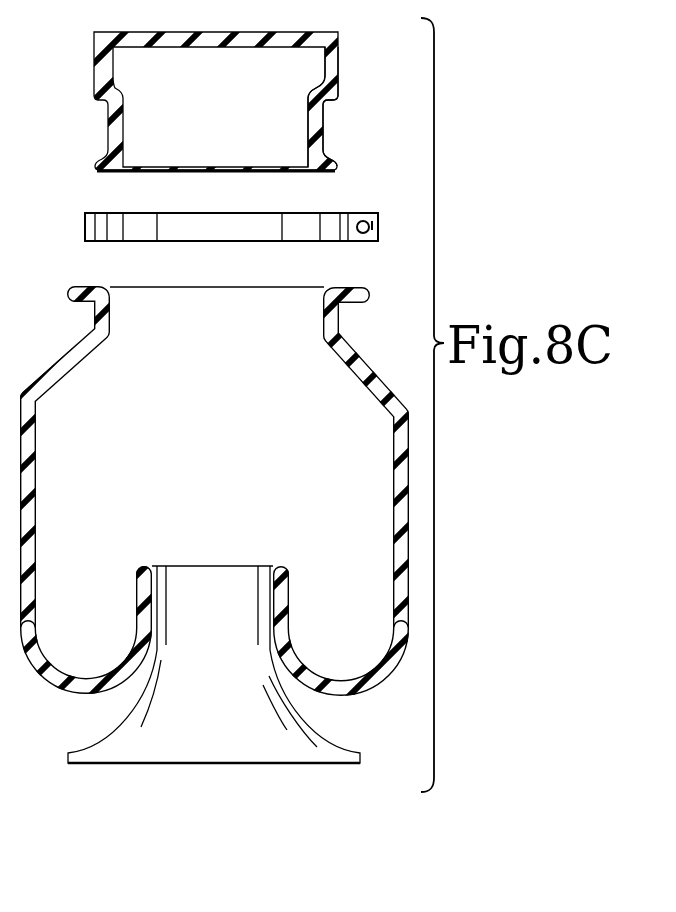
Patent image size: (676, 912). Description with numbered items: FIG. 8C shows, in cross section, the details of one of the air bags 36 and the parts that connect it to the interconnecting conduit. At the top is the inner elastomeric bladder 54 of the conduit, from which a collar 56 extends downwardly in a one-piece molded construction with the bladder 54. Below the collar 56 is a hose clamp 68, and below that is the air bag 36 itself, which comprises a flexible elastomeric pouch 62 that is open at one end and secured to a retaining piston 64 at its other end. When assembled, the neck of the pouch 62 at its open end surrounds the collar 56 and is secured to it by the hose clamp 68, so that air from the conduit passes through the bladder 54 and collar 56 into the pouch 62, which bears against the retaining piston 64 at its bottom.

The air bag 36 is at (338, 456).
The bladder 54 is at (339, 88).
The collar 56 is at (321, 128).
The flexible elastomeric pouch 62 is at (393, 648).
The retaining piston 64 is at (298, 730).
The hose clamp 68 is at (360, 212).